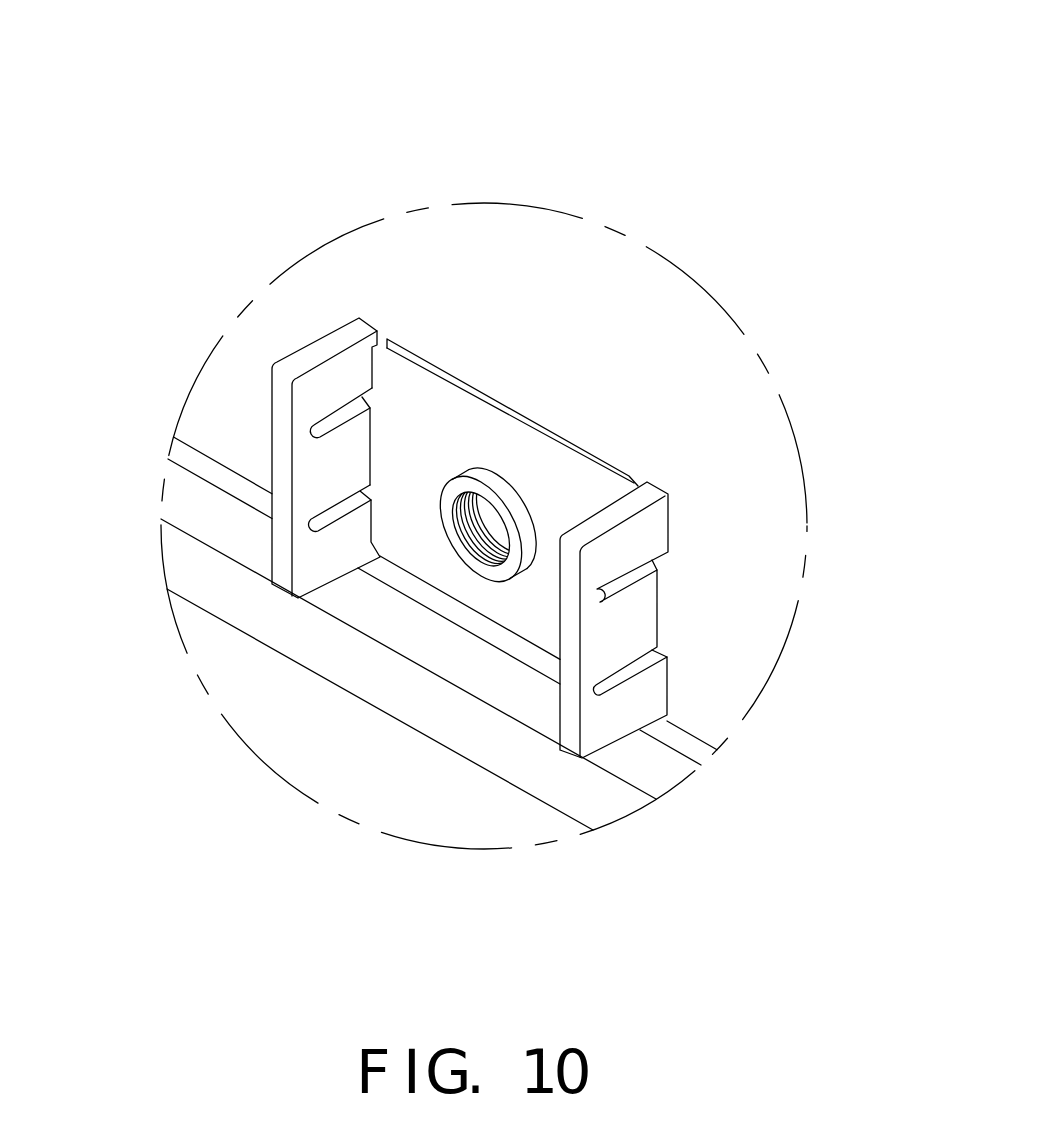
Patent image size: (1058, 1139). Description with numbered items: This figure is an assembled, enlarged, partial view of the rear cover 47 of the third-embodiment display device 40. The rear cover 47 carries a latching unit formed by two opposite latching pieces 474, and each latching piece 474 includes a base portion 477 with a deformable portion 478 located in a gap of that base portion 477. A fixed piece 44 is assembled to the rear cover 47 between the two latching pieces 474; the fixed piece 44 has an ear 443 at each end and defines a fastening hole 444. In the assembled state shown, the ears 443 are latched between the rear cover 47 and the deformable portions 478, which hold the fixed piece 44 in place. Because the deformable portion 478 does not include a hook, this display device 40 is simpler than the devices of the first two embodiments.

The display device 40 is at (616, 60).
The fixed piece 44 is at (567, 470).
The ear 443 is at (385, 392).
The fastening hole 444 is at (488, 517).
The rear cover 47 is at (720, 478).
The latching piece 474 is at (690, 633).
The base portion 477 is at (340, 377).
The deformable portion 478 is at (335, 460).